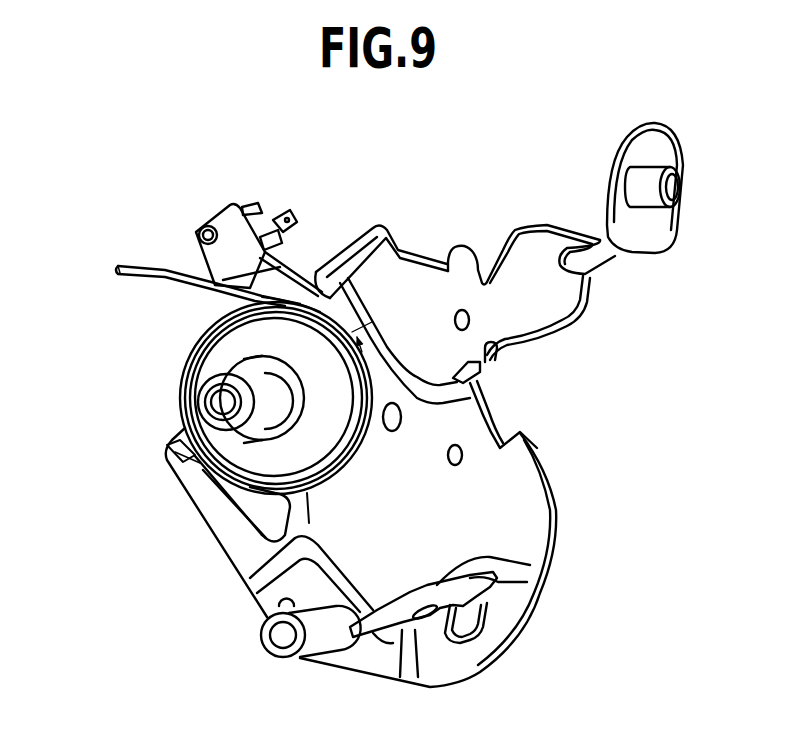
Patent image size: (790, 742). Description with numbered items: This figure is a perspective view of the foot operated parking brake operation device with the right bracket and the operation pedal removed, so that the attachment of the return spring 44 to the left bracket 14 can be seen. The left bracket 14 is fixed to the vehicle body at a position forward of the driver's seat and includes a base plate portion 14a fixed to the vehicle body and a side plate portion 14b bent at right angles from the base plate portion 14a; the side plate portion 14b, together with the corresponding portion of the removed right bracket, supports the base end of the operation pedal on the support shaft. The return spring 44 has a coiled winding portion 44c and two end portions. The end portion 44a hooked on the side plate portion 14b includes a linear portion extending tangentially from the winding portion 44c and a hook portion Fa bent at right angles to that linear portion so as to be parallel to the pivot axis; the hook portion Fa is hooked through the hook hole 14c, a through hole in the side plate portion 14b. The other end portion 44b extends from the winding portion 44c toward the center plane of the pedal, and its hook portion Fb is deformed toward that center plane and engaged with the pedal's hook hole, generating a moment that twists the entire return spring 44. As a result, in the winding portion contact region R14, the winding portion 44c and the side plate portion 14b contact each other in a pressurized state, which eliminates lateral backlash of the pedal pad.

The left bracket 14 is at (676, 342).
The base plate portion 14a is at (652, 237).
The side plate portion 14b is at (243, 557).
The hook hole 14c is at (177, 443).
The winding portion contact region R14 is at (353, 460).
The return spring 44 is at (343, 493).
The end portion 44a is at (190, 476).
The end portion 44b is at (176, 265).
The winding portion 44c is at (311, 493).
The hook portion Fa is at (170, 455).
The hook portion Fb is at (118, 273).